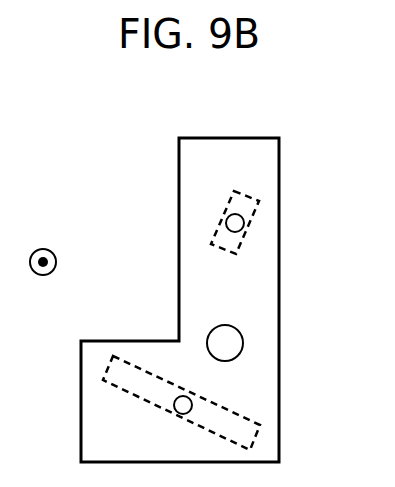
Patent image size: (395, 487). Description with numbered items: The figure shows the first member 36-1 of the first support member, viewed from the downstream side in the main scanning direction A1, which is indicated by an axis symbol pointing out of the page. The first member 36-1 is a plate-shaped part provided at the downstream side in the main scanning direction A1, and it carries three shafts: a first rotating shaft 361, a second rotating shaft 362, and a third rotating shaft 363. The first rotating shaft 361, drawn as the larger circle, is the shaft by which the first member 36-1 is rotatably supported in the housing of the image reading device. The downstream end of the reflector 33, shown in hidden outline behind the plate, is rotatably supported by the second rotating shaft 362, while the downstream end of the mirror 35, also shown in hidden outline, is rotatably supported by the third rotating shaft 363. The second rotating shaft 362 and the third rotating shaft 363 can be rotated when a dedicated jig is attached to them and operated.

The reflector 33 is at (246, 229).
The mirror 35 is at (104, 374).
The first member 36-1 is at (138, 339).
The first rotating shaft 361 is at (243, 345).
The second rotating shaft 362 is at (216, 222).
The third rotating shaft 363 is at (192, 409).
The main scanning direction A1 is at (47, 246).